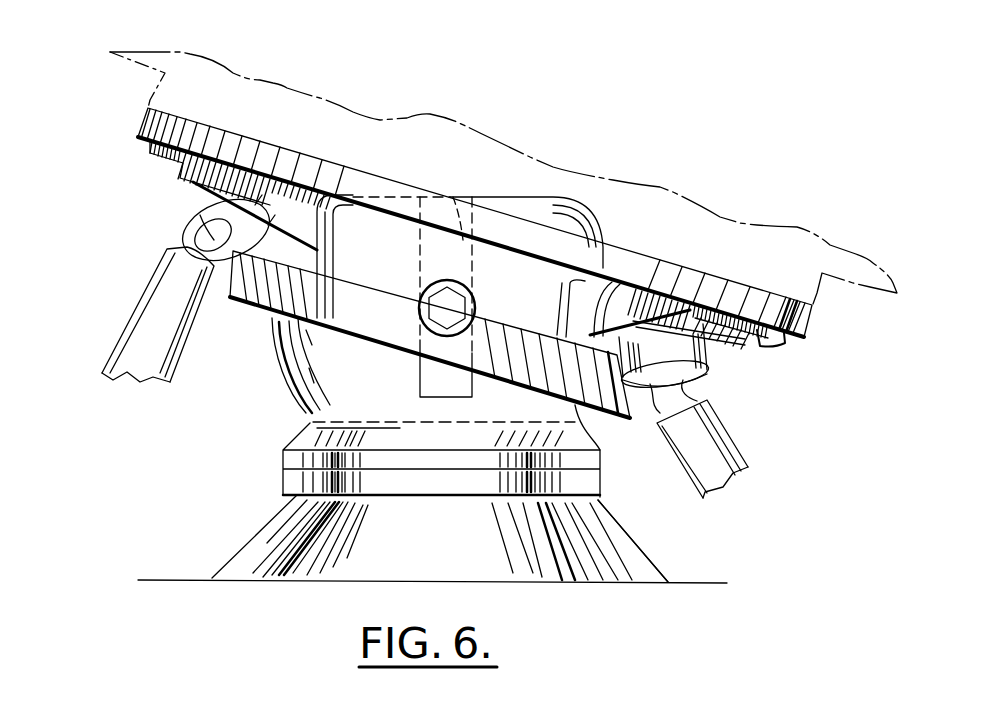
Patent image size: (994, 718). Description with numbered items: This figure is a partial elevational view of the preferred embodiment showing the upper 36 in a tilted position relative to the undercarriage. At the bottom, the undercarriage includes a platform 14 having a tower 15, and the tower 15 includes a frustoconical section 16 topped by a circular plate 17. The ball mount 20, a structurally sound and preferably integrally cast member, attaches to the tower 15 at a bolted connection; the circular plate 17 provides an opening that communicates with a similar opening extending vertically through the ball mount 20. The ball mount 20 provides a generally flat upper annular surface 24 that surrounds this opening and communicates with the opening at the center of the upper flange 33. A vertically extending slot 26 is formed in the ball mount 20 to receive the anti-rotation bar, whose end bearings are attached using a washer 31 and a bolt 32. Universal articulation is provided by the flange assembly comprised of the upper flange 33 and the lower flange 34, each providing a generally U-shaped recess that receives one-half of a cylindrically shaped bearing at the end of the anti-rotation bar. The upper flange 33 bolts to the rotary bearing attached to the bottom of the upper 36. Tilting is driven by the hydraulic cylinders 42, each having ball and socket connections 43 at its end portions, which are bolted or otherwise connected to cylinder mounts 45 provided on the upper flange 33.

The platform 14 is at (192, 580).
The tower 15 is at (617, 527).
The frustoconical section 16 is at (446, 549).
The circular plate 17 is at (297, 485).
The ball mount 20 is at (307, 415).
The upper annular surface 24 is at (553, 197).
The vertically extending slot 26 is at (453, 197).
The washer 31 is at (477, 302).
The bolt 32 is at (442, 308).
The upper flange 33 is at (140, 138).
The lower flange 34 is at (333, 315).
The upper 36 is at (150, 74).
The hydraulic cylinder 42 is at (142, 302).
The ball and socket connection 43 is at (190, 210).
The cylinder mount 45 is at (193, 173).